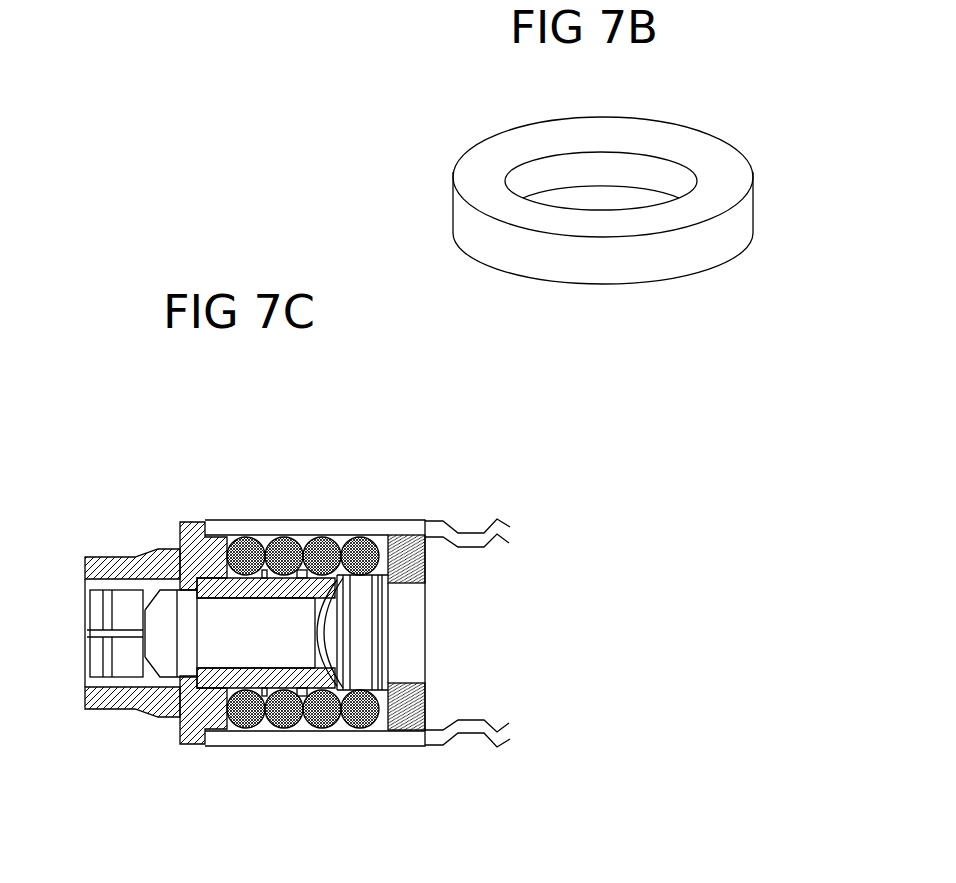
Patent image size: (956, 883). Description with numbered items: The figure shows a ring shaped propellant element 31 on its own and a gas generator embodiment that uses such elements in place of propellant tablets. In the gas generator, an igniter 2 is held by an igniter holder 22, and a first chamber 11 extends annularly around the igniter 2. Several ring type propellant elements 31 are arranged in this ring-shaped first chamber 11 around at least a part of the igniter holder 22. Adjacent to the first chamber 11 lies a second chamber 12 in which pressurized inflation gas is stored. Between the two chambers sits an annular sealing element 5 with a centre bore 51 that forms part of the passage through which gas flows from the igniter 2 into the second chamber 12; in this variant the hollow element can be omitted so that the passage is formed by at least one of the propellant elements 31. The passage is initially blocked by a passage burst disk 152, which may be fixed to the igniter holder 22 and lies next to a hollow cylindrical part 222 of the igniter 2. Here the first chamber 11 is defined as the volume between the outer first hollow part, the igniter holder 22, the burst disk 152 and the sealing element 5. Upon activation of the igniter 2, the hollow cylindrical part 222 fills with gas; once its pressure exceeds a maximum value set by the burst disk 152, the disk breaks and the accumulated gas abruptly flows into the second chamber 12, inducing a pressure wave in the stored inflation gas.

In FIG. 7C, the igniter 2 is at (223, 677).
In FIG. 7C, the sealing element 5 is at (410, 560).
In FIG. 7C, the first chamber 11 is at (225, 550).
In FIG. 7C, the second chamber 12 is at (497, 697).
In FIG. 7C, the igniter holder 22 is at (183, 550).
In FIG. 7B, the ring shape propellant element 31 is at (631, 267).
In FIG. 7C, the ring shape propellant element 31 is at (287, 717).
In FIG. 7C, the centre bore 51 is at (413, 583).
In FIG. 7C, the passage burst disk 152 is at (325, 630).
In FIG. 7C, the hollow cylindrical part 222 is at (257, 645).